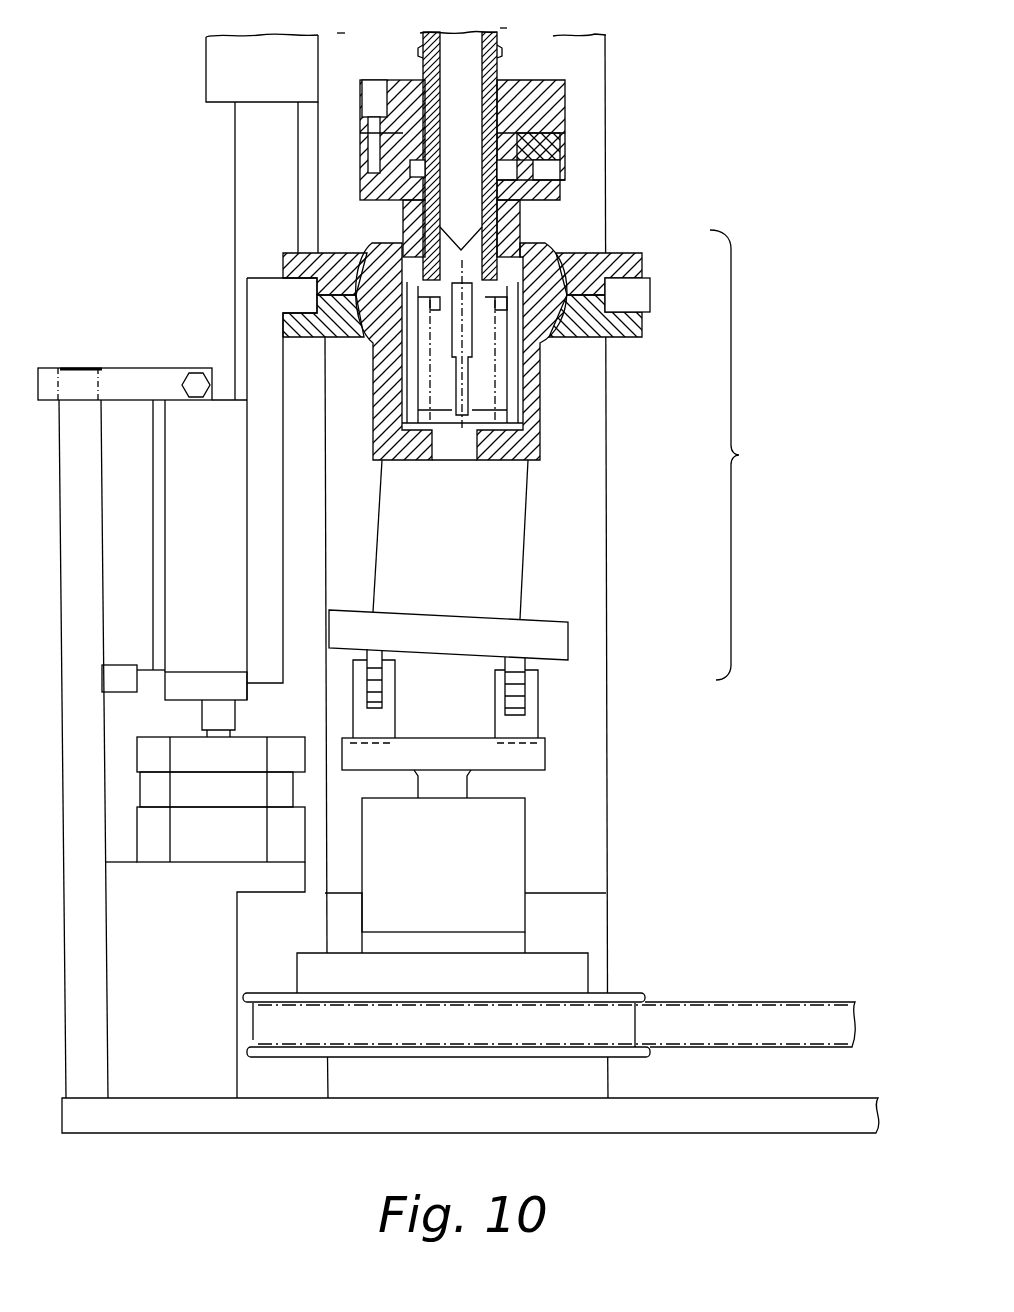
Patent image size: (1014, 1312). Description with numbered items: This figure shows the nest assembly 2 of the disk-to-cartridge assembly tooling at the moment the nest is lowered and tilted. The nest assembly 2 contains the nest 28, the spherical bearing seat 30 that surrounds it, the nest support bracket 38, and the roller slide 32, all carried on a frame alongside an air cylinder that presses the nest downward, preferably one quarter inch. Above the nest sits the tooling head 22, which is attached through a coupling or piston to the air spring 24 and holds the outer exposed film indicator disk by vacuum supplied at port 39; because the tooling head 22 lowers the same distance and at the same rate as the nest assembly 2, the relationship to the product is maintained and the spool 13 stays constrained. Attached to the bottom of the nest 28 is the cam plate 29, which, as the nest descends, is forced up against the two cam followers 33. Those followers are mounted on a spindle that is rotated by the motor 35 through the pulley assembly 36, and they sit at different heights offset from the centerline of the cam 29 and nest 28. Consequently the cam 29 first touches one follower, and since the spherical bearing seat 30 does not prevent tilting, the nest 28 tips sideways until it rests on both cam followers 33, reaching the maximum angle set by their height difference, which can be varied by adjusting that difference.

The nest assembly 2 is at (739, 455).
The spool 13 is at (473, 343).
The tooling head 22 is at (520, 235).
The air spring 24 is at (565, 108).
The nest 28 is at (540, 410).
The cam plate 29 is at (522, 582).
The spherical bearing seat 30 is at (294, 257).
The roller slide 32 is at (222, 398).
The cam followers 33 is at (397, 698).
The motor 35 is at (207, 862).
The pulley assembly 36 is at (627, 992).
The nest support bracket 38 is at (244, 277).
The vacuum port 39 is at (565, 173).